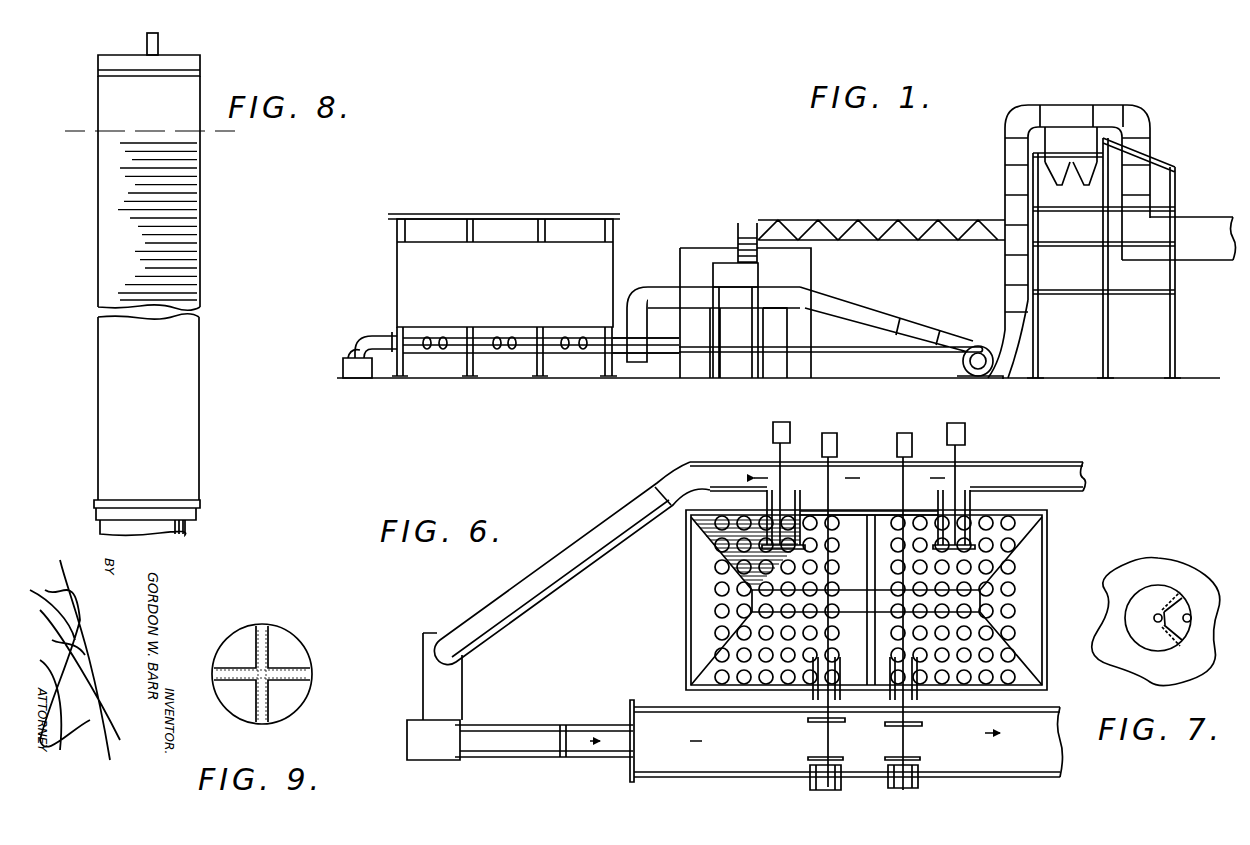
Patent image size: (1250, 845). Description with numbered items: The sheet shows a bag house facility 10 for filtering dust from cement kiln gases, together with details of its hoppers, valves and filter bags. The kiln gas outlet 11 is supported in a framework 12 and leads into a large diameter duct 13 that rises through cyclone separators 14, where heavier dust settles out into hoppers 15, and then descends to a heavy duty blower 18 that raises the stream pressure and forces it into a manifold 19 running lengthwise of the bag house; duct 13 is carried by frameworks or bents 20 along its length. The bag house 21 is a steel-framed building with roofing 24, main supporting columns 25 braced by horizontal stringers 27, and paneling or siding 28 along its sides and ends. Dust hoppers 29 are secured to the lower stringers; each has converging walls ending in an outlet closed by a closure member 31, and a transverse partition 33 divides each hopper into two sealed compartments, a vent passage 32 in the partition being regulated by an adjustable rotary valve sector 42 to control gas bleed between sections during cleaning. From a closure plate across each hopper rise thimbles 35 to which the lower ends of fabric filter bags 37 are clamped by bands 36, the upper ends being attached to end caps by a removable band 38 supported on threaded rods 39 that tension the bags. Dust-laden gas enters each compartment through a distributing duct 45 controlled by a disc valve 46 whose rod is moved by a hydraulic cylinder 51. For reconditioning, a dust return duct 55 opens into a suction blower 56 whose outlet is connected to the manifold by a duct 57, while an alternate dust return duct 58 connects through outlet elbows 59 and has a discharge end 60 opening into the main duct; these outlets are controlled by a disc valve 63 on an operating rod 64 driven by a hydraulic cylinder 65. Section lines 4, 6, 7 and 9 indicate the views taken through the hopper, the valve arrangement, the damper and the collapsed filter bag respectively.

In FIG. 1, the bag house facility 10 is at (766, 196).
In FIG. 1, the gas outlet 11 is at (1222, 250).
In FIG. 1, the framework 12 is at (1040, 345).
In FIG. 1, the duct 13 is at (1137, 183).
In FIG. 1, the cyclone separators 14 is at (1068, 128).
In FIG. 1, the hoppers 15 is at (650, 287).
In FIG. 1, the blower 18 is at (962, 342).
In FIG. 1, the manifold 19 is at (632, 355).
In FIG. 6, the manifold 19 is at (1042, 750).
In FIG. 1, the frameworks or bents 20 is at (778, 325).
In FIG. 1, the bag house 21 is at (425, 200).
In FIG. 1, the roofing 24 is at (518, 214).
In FIG. 1, the main supporting columns 25 is at (545, 232).
In FIG. 1, the stringers 27 is at (575, 330).
In FIG. 1, the paneling or siding 28 is at (400, 260).
In FIG. 6, the dust hoppers 29 is at (1047, 580).
In FIG. 6, the closure member 31 is at (700, 624).
In FIG. 7, the vent passage 32 is at (1192, 617).
In FIG. 6, the transverse partition 33 is at (862, 552).
In FIG. 7, the transverse partition 33 is at (1213, 645).
In FIG. 8, the thimble 35 is at (188, 527).
In FIG. 8, the bands 36 is at (200, 504).
In FIG. 8, the fabric filter bag 37 is at (180, 464).
In FIG. 9, the fabric filter bag 37 is at (262, 630).
In FIG. 6, the fabric filter bag 37 is at (1015, 632).
In FIG. 8, the removable band 38 is at (100, 76).
In FIG. 8, the threaded rods 39 is at (147, 40).
In FIG. 6, the rotary valve sector 42 is at (875, 622).
In FIG. 7, the rotary valve sector 42 is at (1160, 588).
In FIG. 6, the distributing duct 45 is at (814, 787).
In FIG. 6, the disc valve 46 is at (825, 722).
In FIG. 6, the hydraulic cylinder 51 is at (838, 444).
In FIG. 1, the dust return duct 55 is at (355, 340).
In FIG. 6, the dust return duct 55 is at (582, 535).
In FIG. 1, the suction blower 56 is at (360, 376).
In FIG. 6, the suction blower 56 is at (440, 750).
In FIG. 1, the duct 57 is at (380, 335).
In FIG. 6, the duct 57 is at (537, 735).
In FIG. 1, the dust return duct 58 is at (673, 355).
In FIG. 1, the outlet elbows 59 is at (512, 338).
In FIG. 6, the outlet elbows 59 is at (767, 500).
In FIG. 1, the discharge end 60 is at (978, 344).
In FIG. 6, the disc valve 63 is at (722, 568).
In FIG. 6, the operating rod 64 is at (770, 452).
In FIG. 6, the hydraulic cylinder 65 is at (773, 432).
In FIG. 1, the section line 4 is at (905, 400).
In FIG. 6, the section line 4 is at (905, 400).
In FIG. 8, the section line 6 is at (318, 345).
In FIG. 1, the section line 6 is at (457, 342).
In FIG. 6, the section line 7 is at (895, 565).
In FIG. 8, the section line 9 is at (80, 345).